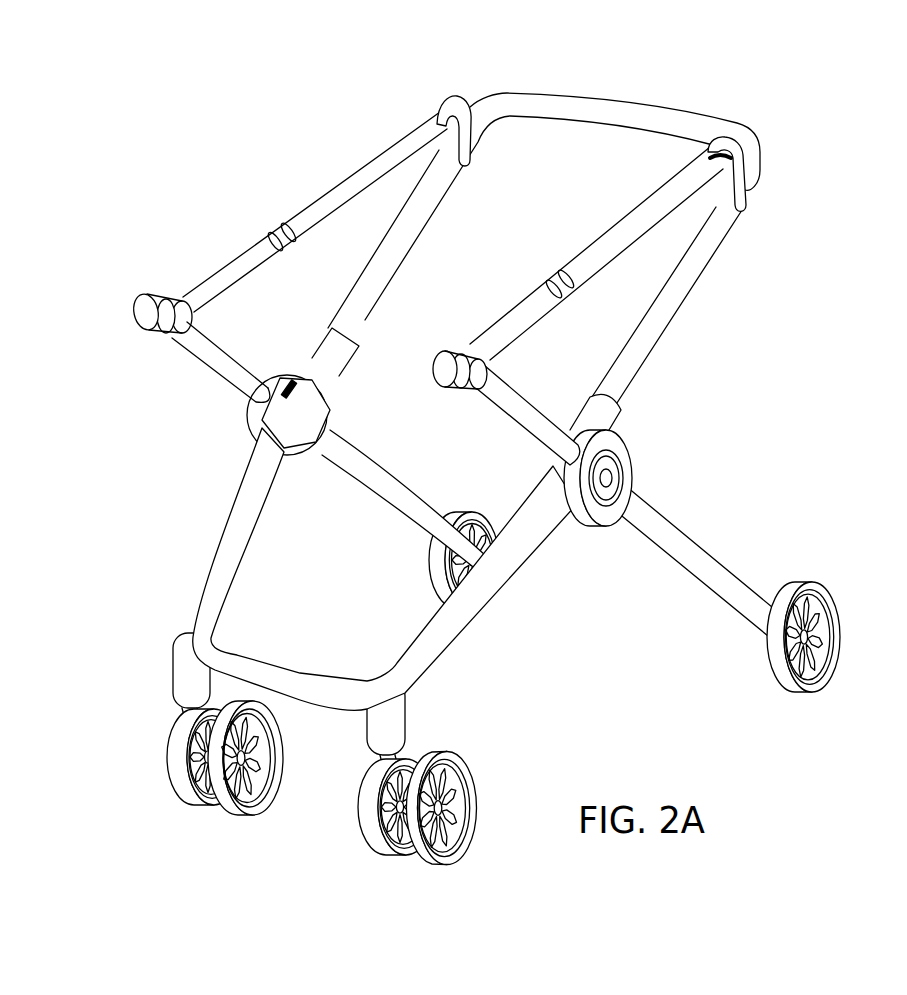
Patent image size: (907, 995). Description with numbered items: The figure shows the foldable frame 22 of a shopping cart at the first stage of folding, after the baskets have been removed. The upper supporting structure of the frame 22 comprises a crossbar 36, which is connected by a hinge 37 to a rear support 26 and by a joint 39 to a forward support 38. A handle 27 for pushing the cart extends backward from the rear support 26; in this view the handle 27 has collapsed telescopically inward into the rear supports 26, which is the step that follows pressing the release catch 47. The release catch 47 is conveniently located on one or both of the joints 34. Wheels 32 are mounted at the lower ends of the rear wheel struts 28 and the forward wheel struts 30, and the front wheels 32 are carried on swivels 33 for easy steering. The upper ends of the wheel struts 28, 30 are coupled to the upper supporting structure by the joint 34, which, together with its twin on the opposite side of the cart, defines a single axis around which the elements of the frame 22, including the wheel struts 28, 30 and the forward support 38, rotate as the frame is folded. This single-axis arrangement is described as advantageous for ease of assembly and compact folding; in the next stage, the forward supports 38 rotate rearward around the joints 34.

The foldable frame 22 is at (192, 193).
The rear support 26 is at (678, 320).
The handle 27 is at (720, 121).
The rear wheel strut 28 is at (705, 555).
The forward wheel strut 30 is at (483, 607).
The wheel 32 is at (840, 633).
The swivel 33 is at (405, 713).
The joint 34 is at (247, 433).
The crossbar 36 is at (603, 233).
The hinge 37 is at (752, 188).
The forward support 38 is at (513, 422).
The joint 39 is at (463, 388).
The release catch 47 is at (280, 367).